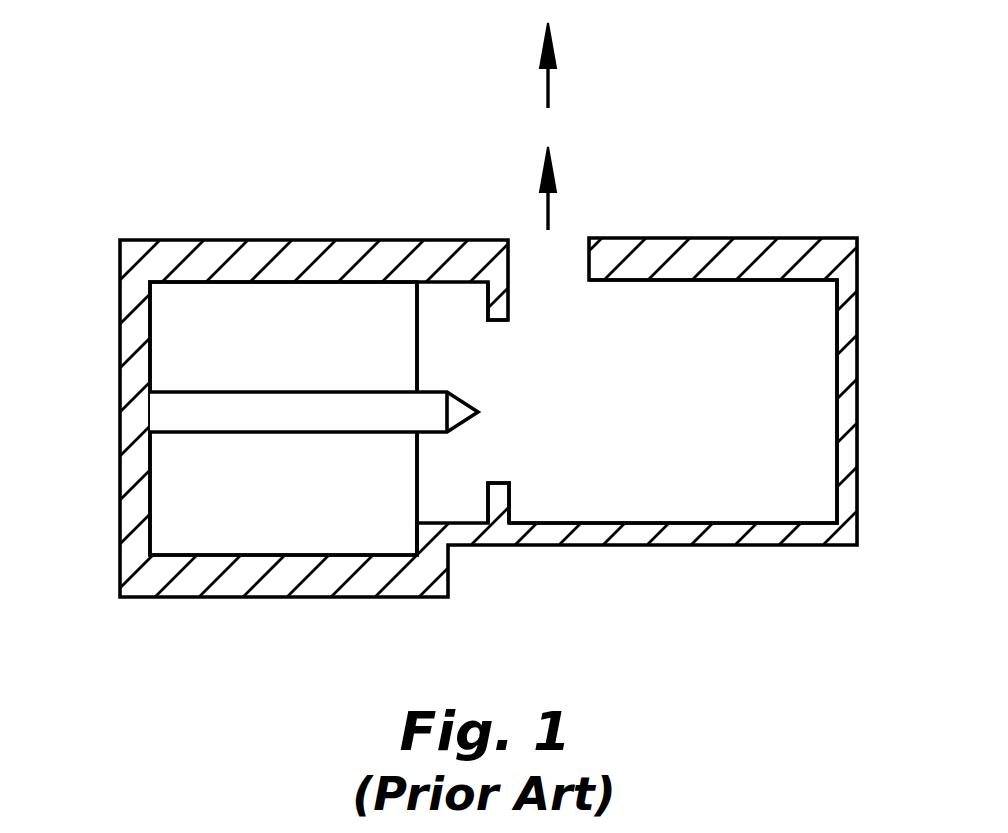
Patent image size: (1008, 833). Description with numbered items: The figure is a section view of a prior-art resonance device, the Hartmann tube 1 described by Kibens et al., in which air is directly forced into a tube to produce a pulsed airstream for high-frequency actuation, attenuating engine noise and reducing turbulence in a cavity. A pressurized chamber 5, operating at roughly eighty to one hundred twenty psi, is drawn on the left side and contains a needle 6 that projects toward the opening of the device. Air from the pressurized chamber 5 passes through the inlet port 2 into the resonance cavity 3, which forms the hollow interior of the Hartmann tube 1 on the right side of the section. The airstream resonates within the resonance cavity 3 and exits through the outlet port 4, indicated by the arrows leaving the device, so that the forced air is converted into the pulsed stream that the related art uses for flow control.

The Hartmann tube 1 is at (800, 223).
The inlet port 2 is at (503, 412).
The resonance cavity 3 is at (730, 354).
The outlet port 4 is at (548, 253).
The pressurized chamber 5 is at (215, 514).
The needle 6 is at (148, 392).